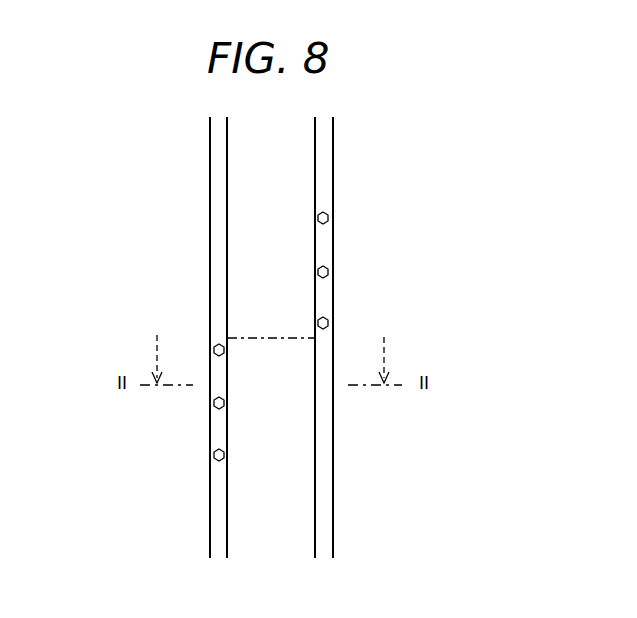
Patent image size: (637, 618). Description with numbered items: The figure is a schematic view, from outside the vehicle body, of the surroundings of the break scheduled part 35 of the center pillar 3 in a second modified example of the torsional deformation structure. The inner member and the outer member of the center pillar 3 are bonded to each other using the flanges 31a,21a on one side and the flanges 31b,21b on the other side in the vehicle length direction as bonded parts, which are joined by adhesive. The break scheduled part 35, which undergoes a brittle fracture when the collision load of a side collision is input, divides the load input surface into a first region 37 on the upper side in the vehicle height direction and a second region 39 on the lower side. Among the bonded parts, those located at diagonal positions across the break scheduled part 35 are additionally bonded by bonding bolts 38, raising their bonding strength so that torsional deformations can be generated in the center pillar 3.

The center pillar 3 is at (178, 268).
The flanges 31a,21a is at (215, 190).
The flanges 31b,21b is at (327, 188).
The break scheduled part 35 is at (300, 336).
The first region 37 is at (298, 292).
The bonding bolts 38 is at (328, 218).
The second region 39 is at (308, 403).